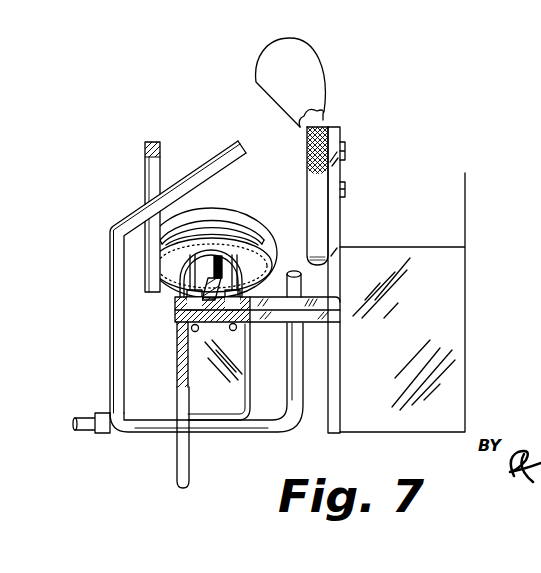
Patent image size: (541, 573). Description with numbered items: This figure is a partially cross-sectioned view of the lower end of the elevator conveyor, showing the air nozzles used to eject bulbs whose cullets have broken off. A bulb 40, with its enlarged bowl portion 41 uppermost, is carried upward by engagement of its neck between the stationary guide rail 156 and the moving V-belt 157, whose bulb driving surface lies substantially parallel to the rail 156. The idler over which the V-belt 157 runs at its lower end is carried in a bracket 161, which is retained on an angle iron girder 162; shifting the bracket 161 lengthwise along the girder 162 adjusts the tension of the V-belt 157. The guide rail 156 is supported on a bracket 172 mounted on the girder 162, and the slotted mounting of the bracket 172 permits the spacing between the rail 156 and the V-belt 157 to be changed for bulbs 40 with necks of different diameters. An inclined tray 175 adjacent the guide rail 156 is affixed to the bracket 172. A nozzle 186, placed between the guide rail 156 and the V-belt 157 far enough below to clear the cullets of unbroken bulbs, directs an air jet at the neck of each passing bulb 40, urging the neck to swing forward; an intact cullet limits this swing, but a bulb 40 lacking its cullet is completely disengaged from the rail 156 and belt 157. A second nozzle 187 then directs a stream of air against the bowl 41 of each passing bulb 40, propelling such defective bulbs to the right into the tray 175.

The bulb 40 is at (282, 73).
The bowl portion 41 is at (323, 69).
The guide rail 156 is at (322, 178).
The V-belt 157 is at (144, 170).
The bracket 161 is at (176, 304).
The angle iron girder 162 is at (177, 457).
The bracket 172 is at (313, 322).
The inclined tray 175 is at (468, 311).
The nozzle 186 is at (303, 278).
The nozzle 187 is at (233, 138).